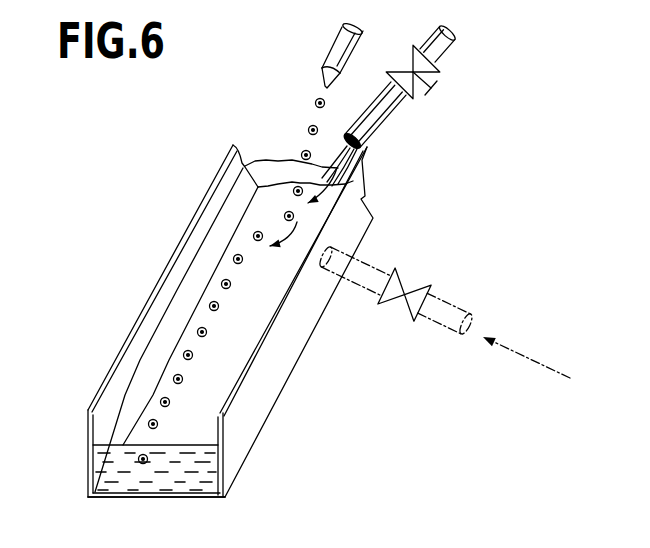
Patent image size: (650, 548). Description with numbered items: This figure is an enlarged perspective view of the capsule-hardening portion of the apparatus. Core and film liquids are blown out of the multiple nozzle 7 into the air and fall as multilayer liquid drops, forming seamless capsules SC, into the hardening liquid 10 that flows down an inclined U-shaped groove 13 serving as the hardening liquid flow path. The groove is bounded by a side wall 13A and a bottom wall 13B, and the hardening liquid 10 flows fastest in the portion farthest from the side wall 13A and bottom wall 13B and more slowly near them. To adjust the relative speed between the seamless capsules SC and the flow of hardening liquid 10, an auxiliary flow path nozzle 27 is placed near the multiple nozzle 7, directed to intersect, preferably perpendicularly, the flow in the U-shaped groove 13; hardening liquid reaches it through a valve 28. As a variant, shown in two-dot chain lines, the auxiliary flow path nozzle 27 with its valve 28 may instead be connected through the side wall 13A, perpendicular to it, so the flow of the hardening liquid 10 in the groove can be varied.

The multiple nozzle 7 is at (337, 52).
The hardening liquid 10 is at (120, 477).
The U-shaped groove 13 is at (165, 271).
The side wall 13A is at (263, 388).
The bottom wall 13B is at (207, 501).
The auxiliary flow path nozzle 27 is at (383, 110).
The valve 28 is at (440, 73).
The seamless capsule SC is at (186, 350).